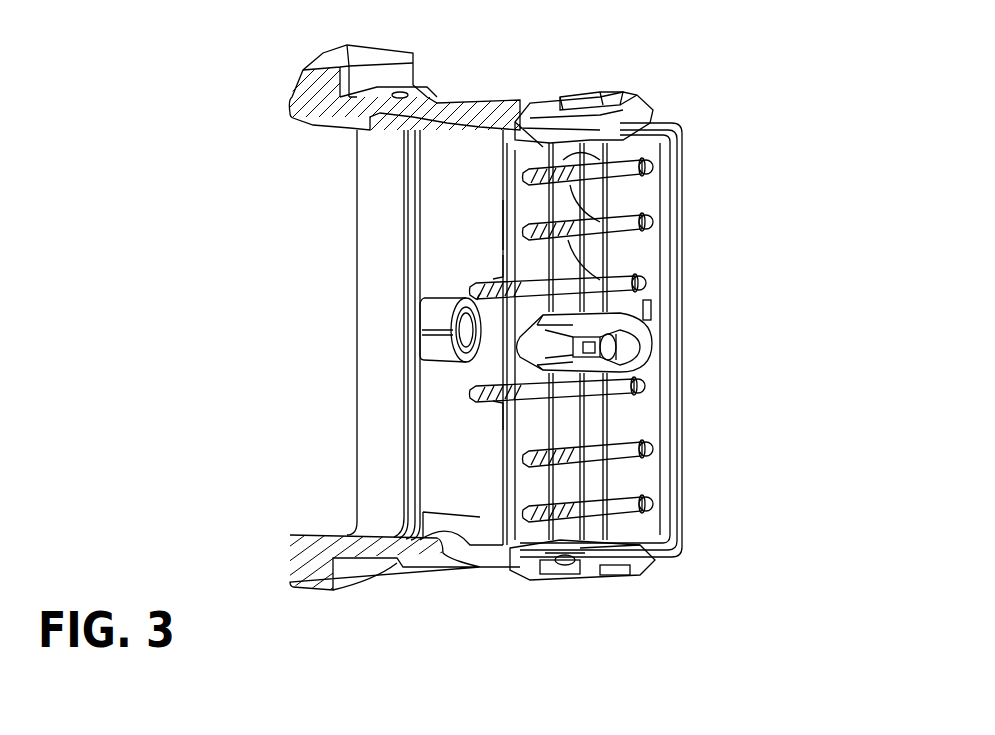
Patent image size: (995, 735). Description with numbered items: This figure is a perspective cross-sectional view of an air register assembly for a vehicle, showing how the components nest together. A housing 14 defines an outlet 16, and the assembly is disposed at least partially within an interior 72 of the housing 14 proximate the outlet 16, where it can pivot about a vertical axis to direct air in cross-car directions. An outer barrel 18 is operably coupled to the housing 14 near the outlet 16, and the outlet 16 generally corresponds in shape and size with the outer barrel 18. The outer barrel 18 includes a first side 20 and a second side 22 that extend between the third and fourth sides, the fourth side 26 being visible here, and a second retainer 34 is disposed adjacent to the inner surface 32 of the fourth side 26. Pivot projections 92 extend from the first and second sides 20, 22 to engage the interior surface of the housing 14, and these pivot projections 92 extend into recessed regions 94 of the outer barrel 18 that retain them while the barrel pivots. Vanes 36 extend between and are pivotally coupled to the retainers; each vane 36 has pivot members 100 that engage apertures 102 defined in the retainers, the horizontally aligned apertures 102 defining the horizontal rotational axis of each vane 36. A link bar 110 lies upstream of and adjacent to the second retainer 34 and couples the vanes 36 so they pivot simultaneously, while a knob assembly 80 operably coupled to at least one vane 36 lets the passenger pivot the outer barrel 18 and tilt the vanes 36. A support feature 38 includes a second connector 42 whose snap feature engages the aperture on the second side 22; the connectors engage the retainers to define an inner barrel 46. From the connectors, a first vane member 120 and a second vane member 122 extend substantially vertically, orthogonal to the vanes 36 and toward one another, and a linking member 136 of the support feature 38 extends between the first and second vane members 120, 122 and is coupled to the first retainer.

The housing 14 is at (437, 102).
The outlet 16 is at (650, 125).
The outer barrel 18 is at (663, 333).
The first side 20 is at (625, 115).
The second side 22 is at (655, 563).
The fourth side 26 is at (663, 310).
The inner surface 32 is at (857, 389).
The second retainer 34 is at (653, 198).
The vanes 36 is at (527, 255).
The support feature 38 is at (497, 223).
The second connector 42 is at (600, 545).
The inner barrel 46 is at (653, 540).
The interior 72 is at (397, 232).
The knob assembly 80 is at (650, 357).
The pivot projections 92 is at (573, 573).
The recessed regions 94 is at (553, 590).
The pivot members 100 is at (645, 160).
The apertures 102 is at (652, 169).
The link bar 110 is at (603, 128).
The first vane member 120 is at (510, 253).
The second vane member 122 is at (520, 433).
The linking member 136 is at (455, 314).